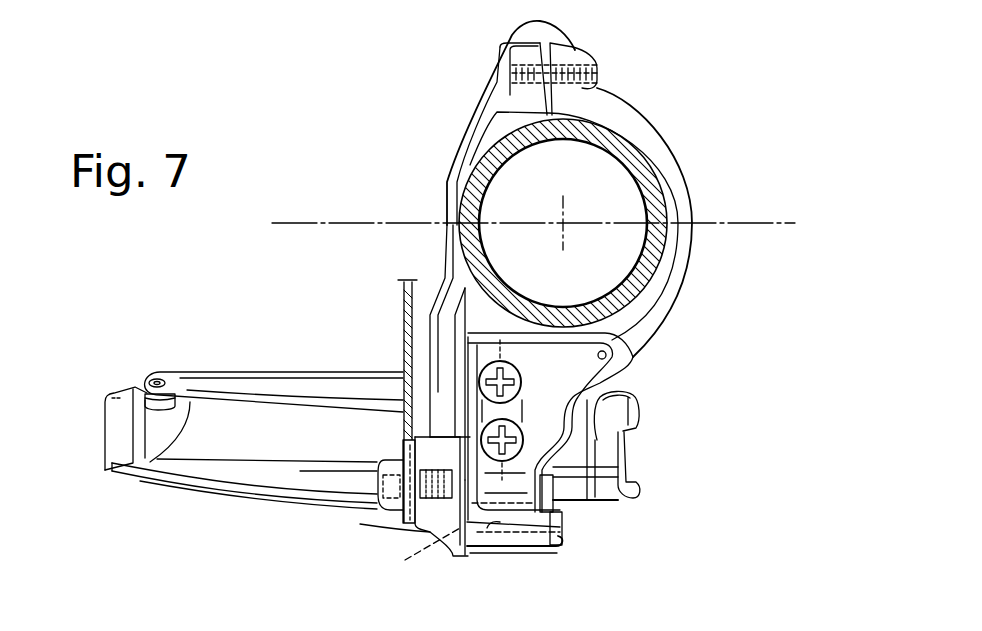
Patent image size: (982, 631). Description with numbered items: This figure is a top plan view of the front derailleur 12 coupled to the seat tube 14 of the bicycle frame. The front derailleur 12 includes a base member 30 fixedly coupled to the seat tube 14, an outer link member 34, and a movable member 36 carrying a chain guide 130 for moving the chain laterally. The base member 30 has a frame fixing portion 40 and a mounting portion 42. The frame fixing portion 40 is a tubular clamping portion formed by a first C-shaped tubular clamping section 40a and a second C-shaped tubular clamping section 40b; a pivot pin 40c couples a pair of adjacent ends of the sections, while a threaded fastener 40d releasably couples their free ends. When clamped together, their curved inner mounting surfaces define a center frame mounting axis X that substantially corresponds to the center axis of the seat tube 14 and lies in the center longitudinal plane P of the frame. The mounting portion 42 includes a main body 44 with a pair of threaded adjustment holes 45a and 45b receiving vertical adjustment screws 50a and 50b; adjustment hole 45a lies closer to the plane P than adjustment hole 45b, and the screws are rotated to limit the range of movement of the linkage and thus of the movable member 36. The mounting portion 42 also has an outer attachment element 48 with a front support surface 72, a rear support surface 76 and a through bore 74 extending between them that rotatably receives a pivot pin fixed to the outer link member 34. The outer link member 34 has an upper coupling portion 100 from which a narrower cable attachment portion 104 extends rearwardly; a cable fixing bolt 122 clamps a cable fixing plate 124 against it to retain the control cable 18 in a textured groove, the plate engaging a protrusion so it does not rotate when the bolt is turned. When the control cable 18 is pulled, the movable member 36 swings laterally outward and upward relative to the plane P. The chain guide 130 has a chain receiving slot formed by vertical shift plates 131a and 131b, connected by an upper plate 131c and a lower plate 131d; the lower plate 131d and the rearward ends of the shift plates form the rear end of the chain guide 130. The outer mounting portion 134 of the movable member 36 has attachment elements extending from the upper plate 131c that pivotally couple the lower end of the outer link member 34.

The front derailleur 12 is at (727, 318).
The seat tube 14 is at (600, 138).
The control cable 18 is at (403, 300).
The base member 30 is at (660, 105).
The outer link member 34 is at (398, 543).
The movable member 36 is at (230, 343).
The frame fixing portion 40 is at (400, 67).
The first C-shaped tubular clamping section 40a is at (460, 148).
The second C-shaped tubular clamping section 40b is at (498, 40).
The pivot pin 40c is at (620, 363).
The threaded fastener 40d is at (595, 60).
The mounting portion 42 is at (460, 280).
The main body 44 is at (637, 397).
The threaded adjustment hole 45a is at (521, 376).
The threaded adjustment hole 45b is at (512, 423).
The outer attachment element 48 is at (527, 553).
The vertical adjustment screw 50a is at (498, 362).
The vertical adjustment screw 50b is at (522, 443).
The front support surface 72 is at (560, 515).
The through bore 74 is at (463, 553).
The rear support surface 76 is at (418, 538).
The upper coupling portion 100 is at (640, 490).
The cable attachment portion 104 is at (430, 453).
The cable fixing bolt 122 is at (300, 471).
The cable fixing plate 124 is at (403, 528).
The chain guide 130 is at (414, 452).
The vertical shift plate 131a is at (150, 462).
The vertical shift plate 131b is at (193, 497).
The upper plate 131c is at (640, 420).
The lower plate 131d is at (108, 418).
The outer mounting portion 134 is at (618, 467).
The center longitudinal plane P is at (748, 222).
The center frame mounting axis X is at (566, 230).